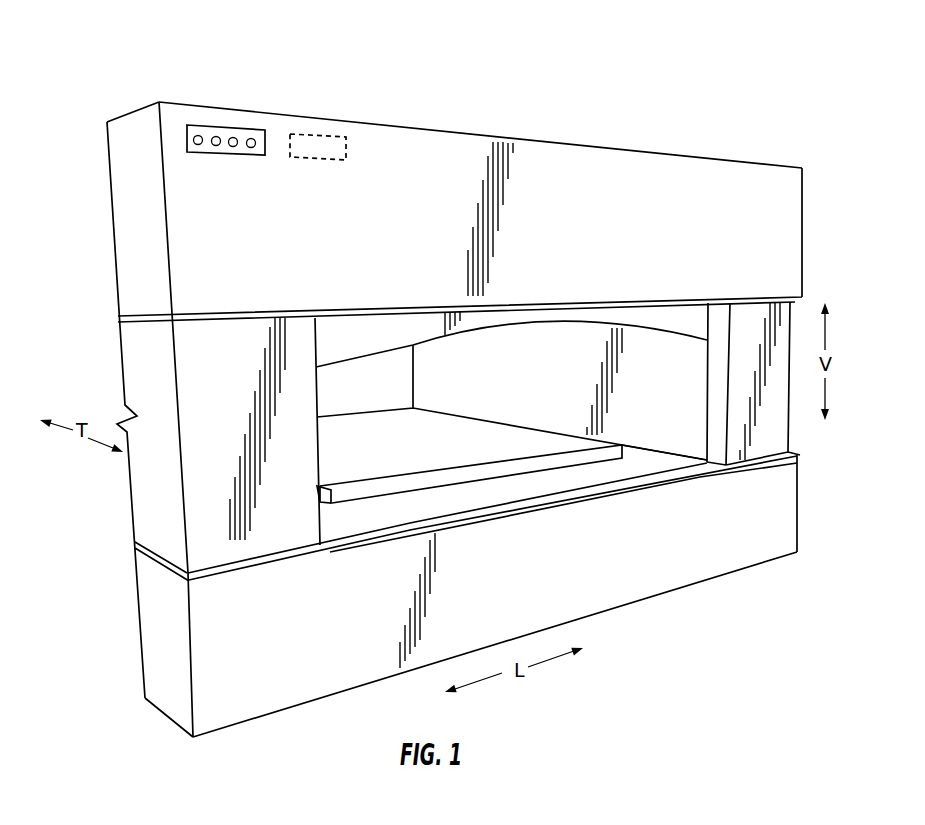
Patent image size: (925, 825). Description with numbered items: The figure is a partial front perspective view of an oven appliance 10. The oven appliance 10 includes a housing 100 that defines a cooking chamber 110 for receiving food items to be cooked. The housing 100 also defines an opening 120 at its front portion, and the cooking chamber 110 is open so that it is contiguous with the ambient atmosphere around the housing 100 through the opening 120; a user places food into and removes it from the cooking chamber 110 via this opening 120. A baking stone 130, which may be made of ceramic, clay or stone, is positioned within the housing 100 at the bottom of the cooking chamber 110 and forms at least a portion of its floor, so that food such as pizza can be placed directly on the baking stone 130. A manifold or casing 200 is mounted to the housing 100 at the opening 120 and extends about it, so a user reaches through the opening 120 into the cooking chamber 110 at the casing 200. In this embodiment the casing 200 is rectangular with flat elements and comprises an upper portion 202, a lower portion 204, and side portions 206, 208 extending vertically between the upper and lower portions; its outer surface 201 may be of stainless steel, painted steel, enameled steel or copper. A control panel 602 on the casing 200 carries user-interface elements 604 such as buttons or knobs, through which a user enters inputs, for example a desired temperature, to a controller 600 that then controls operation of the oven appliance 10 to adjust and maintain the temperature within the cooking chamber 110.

The oven appliance 10 is at (164, 68).
The housing 100 is at (333, 523).
The cooking chamber 110 is at (400, 361).
The opening 120 is at (495, 512).
The baking stone 130 is at (377, 490).
The casing 200 is at (780, 218).
The outer surface 201 is at (746, 548).
The upper portion 202 is at (680, 170).
The lower portion 204 is at (265, 708).
The side portion 206 is at (142, 470).
The side portion 208 is at (790, 433).
The controller 600 is at (337, 133).
The control panel 602 is at (236, 126).
The user-interface elements 604 is at (198, 145).